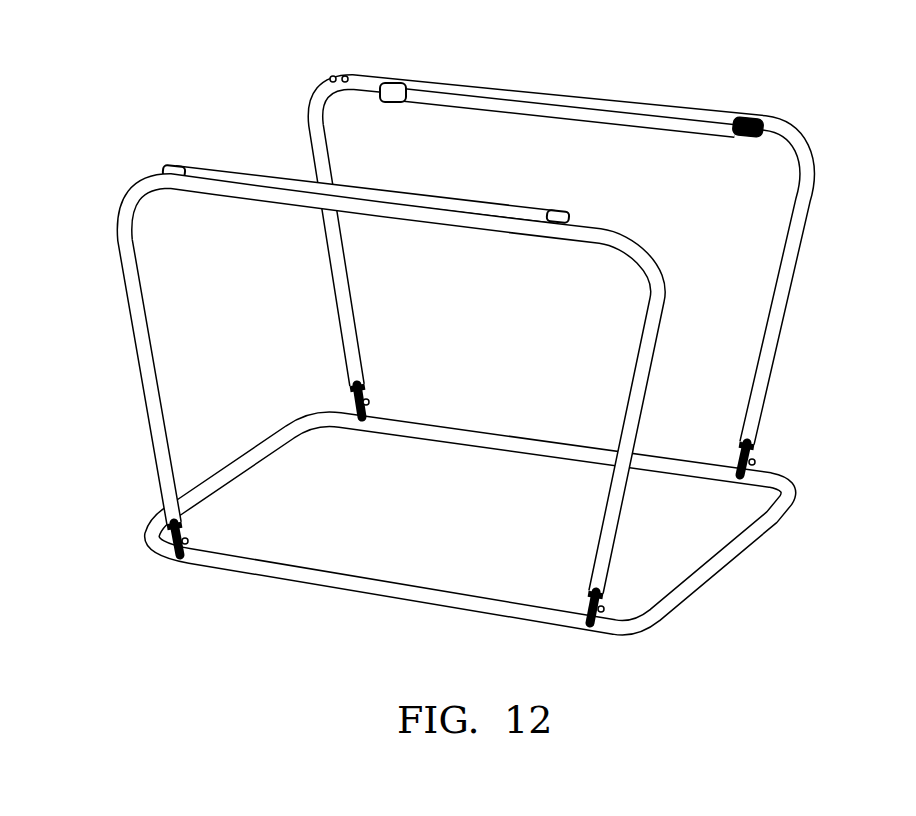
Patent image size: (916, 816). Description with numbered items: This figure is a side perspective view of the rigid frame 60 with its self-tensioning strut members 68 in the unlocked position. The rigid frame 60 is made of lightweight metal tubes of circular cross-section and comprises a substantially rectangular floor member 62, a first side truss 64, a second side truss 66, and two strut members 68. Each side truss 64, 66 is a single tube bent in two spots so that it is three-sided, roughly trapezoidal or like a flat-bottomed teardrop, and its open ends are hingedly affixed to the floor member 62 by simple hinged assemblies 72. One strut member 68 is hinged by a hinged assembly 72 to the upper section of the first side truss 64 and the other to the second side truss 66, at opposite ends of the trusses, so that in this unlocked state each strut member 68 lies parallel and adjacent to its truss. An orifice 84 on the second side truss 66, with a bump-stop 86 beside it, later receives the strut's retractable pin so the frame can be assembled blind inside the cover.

The rigid frame 60 is at (476, 324).
The floor member 62 is at (722, 568).
The first side truss 64 is at (643, 385).
The second side truss 66 is at (781, 297).
The strut member 68 is at (628, 120).
The hinged assembly 72 is at (752, 444).
The orifice 84 is at (347, 77).
The bump-stop 86 is at (331, 78).